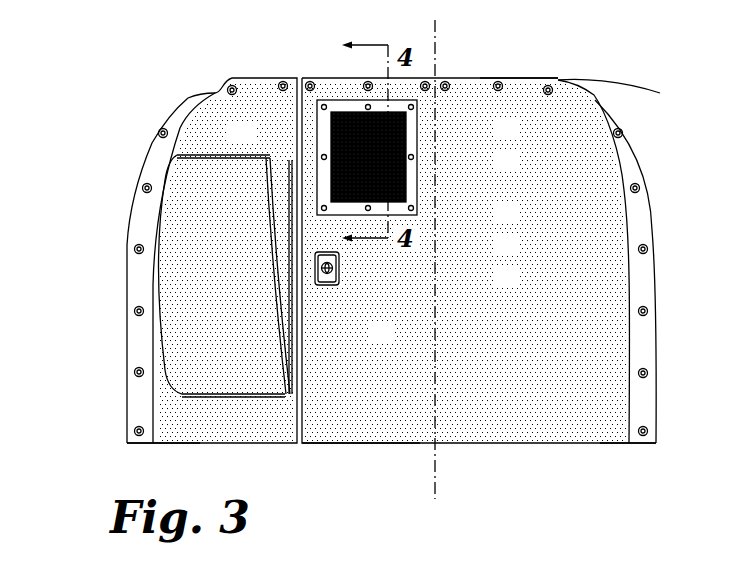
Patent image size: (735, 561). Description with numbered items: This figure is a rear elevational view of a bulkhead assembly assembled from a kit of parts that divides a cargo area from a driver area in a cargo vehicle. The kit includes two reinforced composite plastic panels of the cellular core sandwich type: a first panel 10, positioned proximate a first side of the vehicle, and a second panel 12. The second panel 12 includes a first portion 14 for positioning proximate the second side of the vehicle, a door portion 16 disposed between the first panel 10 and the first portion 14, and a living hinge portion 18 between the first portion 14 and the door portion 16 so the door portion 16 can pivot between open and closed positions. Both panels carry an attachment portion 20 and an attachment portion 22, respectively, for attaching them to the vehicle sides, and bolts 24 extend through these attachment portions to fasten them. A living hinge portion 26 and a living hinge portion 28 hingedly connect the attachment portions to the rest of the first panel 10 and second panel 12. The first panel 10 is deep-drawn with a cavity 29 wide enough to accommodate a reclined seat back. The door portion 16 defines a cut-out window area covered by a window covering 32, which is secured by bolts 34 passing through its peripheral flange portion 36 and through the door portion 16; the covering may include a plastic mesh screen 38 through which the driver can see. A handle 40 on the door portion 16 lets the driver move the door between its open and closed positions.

The first panel 10 is at (249, 76).
The second panel 12 is at (535, 75).
The first portion 14 is at (507, 77).
The door portion 16 is at (342, 444).
The living hinge portion 18 is at (438, 449).
The attachment portion 20 is at (145, 163).
The attachment portion 22 is at (641, 163).
The bolts 24 is at (188, 97).
The living hinge portion 26 is at (153, 440).
The living hinge portion 28 is at (628, 444).
The cavity 29 is at (292, 376).
The window covering 32 is at (424, 185).
The bolts 34 is at (321, 208).
The peripheral flange portion 36 is at (419, 199).
The plastic mesh screen 38 is at (399, 172).
The handle 40 is at (327, 286).